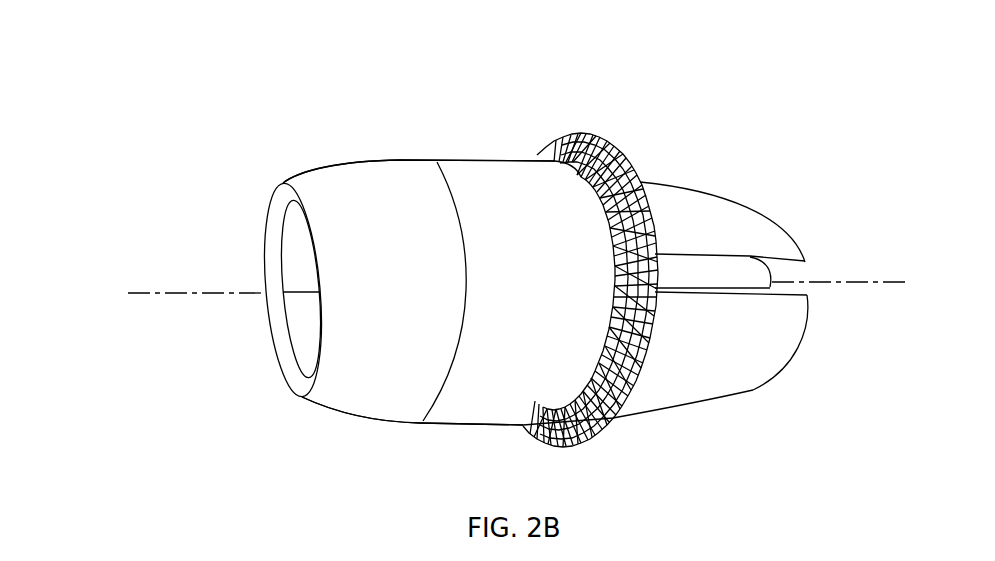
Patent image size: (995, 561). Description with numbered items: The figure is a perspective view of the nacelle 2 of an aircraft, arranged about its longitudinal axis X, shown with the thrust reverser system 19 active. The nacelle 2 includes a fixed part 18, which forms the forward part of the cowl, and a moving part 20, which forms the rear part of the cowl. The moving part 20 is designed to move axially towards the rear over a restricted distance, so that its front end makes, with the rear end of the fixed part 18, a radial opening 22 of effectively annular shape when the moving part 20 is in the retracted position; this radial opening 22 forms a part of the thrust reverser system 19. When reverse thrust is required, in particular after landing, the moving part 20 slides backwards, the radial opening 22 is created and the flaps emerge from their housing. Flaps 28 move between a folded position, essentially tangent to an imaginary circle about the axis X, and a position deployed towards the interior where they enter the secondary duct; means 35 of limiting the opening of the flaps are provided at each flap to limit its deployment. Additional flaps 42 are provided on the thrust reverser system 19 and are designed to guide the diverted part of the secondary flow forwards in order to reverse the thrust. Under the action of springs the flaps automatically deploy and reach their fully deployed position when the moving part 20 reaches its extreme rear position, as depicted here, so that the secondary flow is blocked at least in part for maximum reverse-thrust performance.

The longitudinal axis X is at (157, 293).
The nacelle 2 is at (500, 116).
The fixed part 18 is at (463, 173).
The thrust reverser system 19 is at (609, 112).
The radial opening 22 is at (580, 173).
The flaps 42 is at (607, 180).
The means of limiting the opening of the flaps 35 is at (652, 207).
The flaps 28 is at (638, 330).
The moving part 20 is at (784, 212).